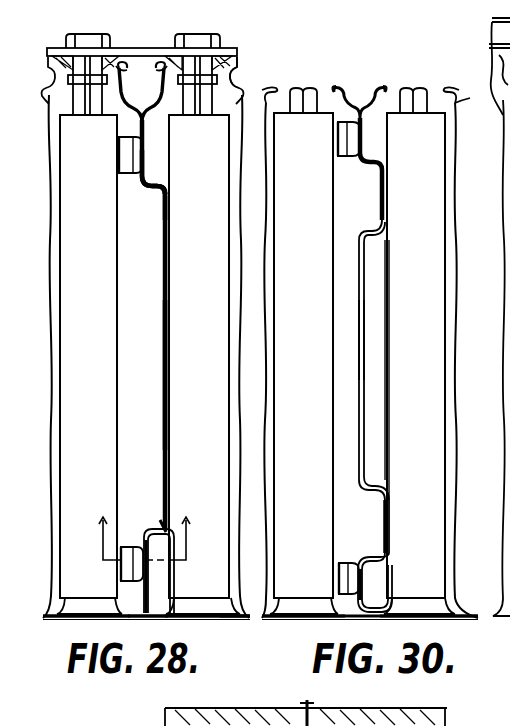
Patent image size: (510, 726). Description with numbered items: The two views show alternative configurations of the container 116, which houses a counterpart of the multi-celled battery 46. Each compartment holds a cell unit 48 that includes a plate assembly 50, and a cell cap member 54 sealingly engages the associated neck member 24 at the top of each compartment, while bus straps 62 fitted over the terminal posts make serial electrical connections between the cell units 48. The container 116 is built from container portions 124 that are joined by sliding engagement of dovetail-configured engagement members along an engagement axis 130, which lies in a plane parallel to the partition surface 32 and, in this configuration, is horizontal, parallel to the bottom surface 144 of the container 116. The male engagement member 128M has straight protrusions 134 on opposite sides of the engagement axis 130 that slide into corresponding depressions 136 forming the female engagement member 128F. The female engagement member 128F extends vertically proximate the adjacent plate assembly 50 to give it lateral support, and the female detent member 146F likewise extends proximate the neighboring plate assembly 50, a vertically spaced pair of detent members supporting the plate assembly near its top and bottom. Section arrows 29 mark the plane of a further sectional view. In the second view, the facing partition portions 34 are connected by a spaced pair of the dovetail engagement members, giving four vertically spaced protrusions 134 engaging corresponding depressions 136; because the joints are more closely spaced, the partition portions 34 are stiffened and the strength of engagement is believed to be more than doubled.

In FIG. 28, the neck member 24 is at (141, 92).
In FIG. 28, the section line 29 is at (142, 522).
In FIG. 28, the partition surface 32 is at (158, 584).
In FIG. 28, the partition portion 34 is at (153, 171).
In FIG. 30, the partition portion 34 is at (358, 336).
In FIG. 28, the multi-celled battery 46 is at (232, 621).
In FIG. 28, the cell unit 48 is at (193, 33).
In FIG. 28, the plate assembly 50 is at (100, 401).
In FIG. 30, the plate assembly 50 is at (317, 413).
In FIG. 28, the cell cap member 54 is at (239, 52).
In FIG. 30, the cell cap member 54 is at (488, 50).
In FIG. 28, the bus strap 62 is at (229, 48).
In FIG. 30, the bus strap 62 is at (492, 22).
In FIG. 28, the container 116 is at (236, 619).
In FIG. 28, the container portion 124 is at (45, 619).
In FIG. 30, the container portion 124 is at (322, 619).
In FIG. 28, the male engagement member 128M is at (161, 251).
In FIG. 30, the male engagement member 128M is at (386, 521).
In FIG. 28, the female engagement member 128F is at (172, 272).
In FIG. 30, the female engagement member 128F is at (396, 188).
In FIG. 28, the engagement axis 130 is at (160, 376).
In FIG. 28, the protrusion 134 is at (160, 192).
In FIG. 28, the depression 136 is at (158, 190).
In FIG. 28, the bottom surface 144 is at (122, 619).
In FIG. 28, the female detent member 146F is at (120, 573).
In FIG. 30, the female detent member 146F is at (338, 573).